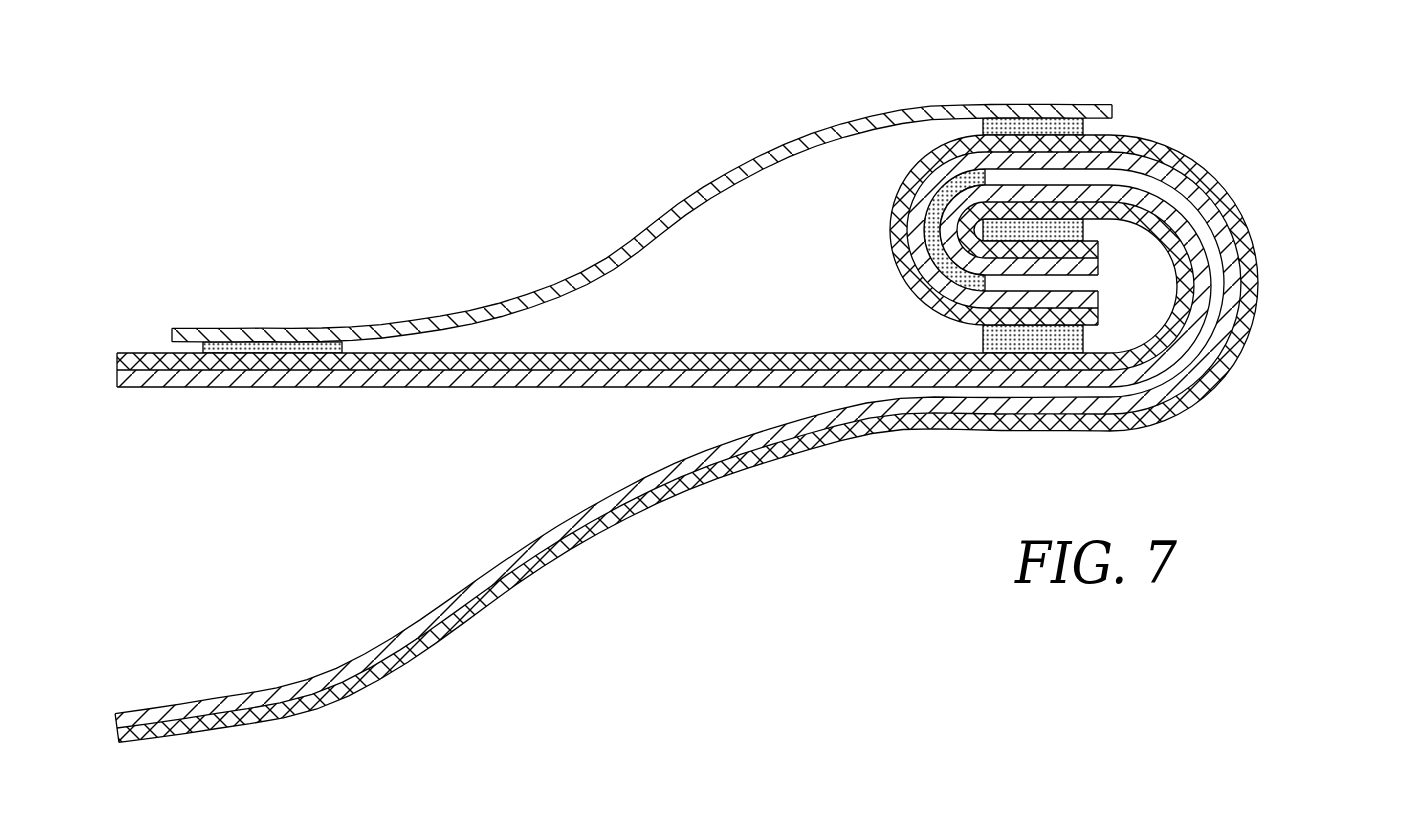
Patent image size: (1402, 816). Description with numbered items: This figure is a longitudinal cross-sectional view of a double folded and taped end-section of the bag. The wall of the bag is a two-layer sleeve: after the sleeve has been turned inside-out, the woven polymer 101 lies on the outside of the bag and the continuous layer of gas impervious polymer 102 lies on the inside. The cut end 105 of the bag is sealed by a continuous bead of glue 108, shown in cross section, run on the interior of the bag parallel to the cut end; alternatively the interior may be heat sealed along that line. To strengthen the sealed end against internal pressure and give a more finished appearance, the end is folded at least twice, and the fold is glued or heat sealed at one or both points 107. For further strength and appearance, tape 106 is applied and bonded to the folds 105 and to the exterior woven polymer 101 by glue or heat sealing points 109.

The woven polymer 101 is at (700, 353).
The continuous layer of gas impervious polymer 102 is at (507, 387).
The end of the bag 105 is at (732, 397).
The tape 106 is at (707, 188).
The glue or heat seal point of the fold 107 is at (1086, 231).
The bead of glue 108 is at (925, 226).
The glue or heat sealing point 109 is at (1083, 130).